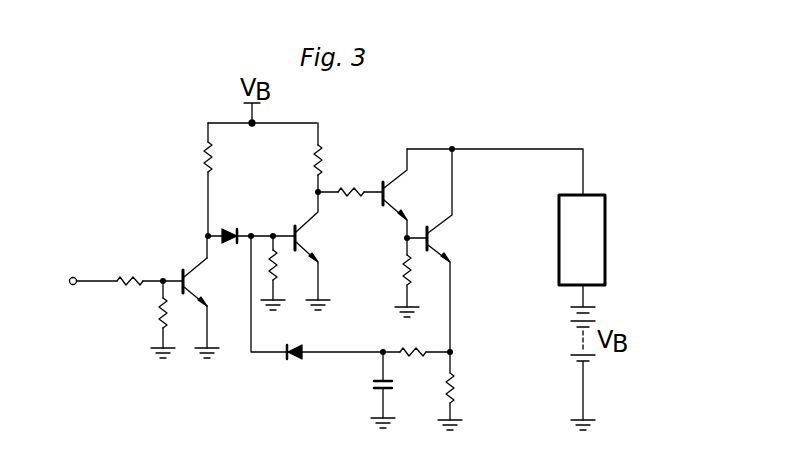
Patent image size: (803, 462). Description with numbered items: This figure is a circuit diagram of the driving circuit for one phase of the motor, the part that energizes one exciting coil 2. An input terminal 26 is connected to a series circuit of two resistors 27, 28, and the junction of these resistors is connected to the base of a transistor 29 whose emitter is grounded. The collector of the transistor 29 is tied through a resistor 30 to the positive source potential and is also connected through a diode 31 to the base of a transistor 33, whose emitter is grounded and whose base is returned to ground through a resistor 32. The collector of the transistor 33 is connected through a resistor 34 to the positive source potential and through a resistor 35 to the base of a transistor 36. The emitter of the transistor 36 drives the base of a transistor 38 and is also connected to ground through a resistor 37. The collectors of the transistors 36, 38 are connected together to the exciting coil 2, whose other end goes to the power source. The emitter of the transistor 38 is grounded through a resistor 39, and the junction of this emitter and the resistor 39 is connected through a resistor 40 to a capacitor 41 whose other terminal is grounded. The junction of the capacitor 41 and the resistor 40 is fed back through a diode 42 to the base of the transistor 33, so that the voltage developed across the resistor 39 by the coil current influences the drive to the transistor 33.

The exciting coil 2 is at (606, 240).
The input terminal 26 is at (72, 285).
The resistor 27 is at (126, 274).
The resistor 28 is at (160, 323).
The transistor 29 is at (189, 285).
The resistor 30 is at (206, 150).
The diode 31 is at (232, 233).
The resistor 32 is at (277, 270).
The transistor 33 is at (300, 238).
The resistor 34 is at (313, 162).
The resistor 35 is at (346, 188).
The transistor 36 is at (392, 192).
The resistor 37 is at (405, 272).
The transistor 38 is at (432, 241).
The resistor 39 is at (455, 386).
The resistor 40 is at (413, 358).
The capacitor 41 is at (372, 385).
The diode 42 is at (295, 358).